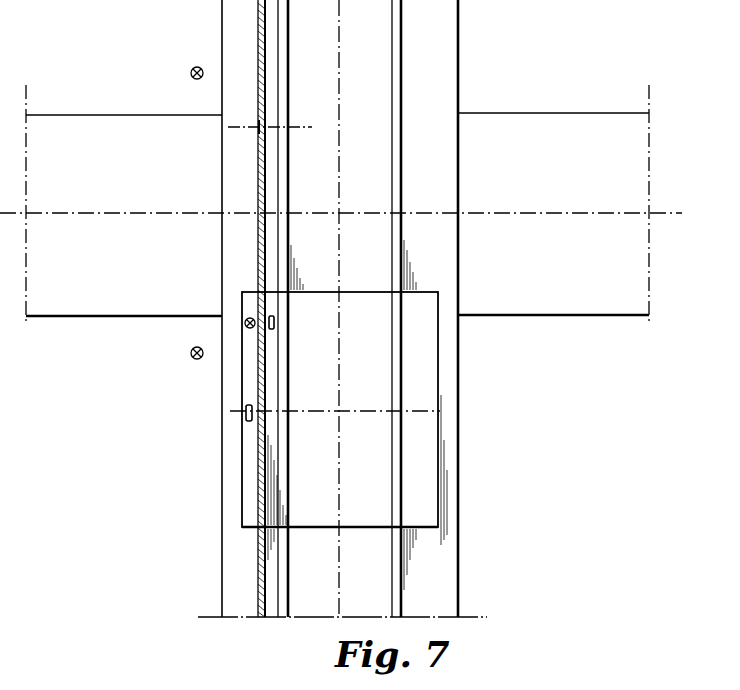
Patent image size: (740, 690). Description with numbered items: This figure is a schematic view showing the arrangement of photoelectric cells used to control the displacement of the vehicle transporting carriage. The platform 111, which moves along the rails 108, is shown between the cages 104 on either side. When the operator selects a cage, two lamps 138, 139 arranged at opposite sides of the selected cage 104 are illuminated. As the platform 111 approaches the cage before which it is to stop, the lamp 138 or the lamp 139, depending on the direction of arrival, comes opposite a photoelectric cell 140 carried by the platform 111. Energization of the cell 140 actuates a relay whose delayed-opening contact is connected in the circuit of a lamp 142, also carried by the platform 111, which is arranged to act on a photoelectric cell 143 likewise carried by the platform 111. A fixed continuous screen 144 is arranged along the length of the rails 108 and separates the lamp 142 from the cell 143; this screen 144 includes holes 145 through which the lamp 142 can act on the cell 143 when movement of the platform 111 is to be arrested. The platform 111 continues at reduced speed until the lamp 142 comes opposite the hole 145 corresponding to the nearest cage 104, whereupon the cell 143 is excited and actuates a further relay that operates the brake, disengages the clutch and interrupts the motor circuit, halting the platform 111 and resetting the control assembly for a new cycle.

The cage 104 is at (201, 113).
The rails 108 is at (288, 40).
The platform 111 is at (330, 298).
The lamp 138 is at (193, 359).
The lamp 139 is at (194, 66).
The photoelectric cell 140 is at (247, 418).
The lamp 142 is at (245, 323).
The photoelectric cell 143 is at (275, 321).
The fixed continuous screen 144 is at (262, 76).
The holes 145 is at (262, 127).